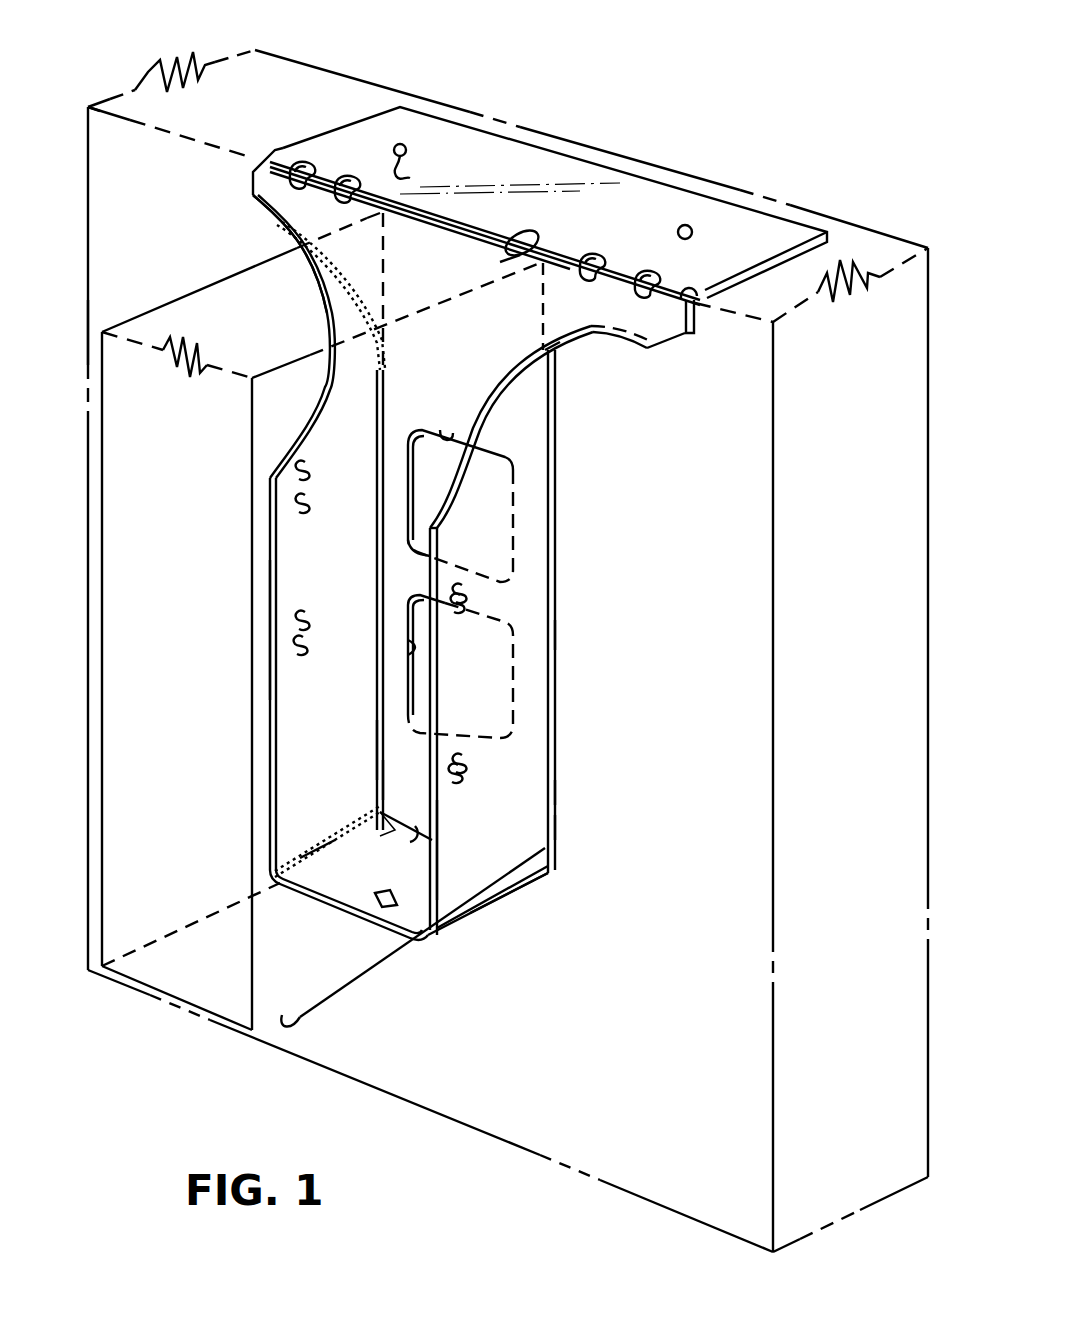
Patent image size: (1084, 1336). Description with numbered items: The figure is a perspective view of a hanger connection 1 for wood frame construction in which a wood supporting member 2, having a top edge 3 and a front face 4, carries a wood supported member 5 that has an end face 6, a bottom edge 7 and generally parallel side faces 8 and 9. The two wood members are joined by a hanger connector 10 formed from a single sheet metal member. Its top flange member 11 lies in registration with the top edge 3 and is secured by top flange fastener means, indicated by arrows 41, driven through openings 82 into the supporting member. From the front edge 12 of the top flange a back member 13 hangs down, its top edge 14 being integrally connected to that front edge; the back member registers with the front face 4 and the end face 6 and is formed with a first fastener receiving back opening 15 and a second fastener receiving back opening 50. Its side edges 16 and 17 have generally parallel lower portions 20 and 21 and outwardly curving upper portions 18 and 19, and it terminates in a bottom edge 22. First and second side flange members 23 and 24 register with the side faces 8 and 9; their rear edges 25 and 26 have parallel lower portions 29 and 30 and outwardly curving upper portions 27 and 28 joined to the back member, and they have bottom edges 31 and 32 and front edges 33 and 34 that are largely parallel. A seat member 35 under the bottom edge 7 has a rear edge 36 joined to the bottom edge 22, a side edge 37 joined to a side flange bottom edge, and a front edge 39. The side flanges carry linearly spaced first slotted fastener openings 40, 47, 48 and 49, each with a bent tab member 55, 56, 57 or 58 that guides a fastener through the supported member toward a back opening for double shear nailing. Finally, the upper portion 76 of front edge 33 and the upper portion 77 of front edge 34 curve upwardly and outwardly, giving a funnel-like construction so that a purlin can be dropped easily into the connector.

The hanger connection 1 is at (617, 133).
The wood supporting member 2 is at (303, 57).
The top edge 3 is at (258, 115).
The front face 4 is at (128, 175).
The wood supported member 5 is at (160, 300).
The end face 6 is at (500, 259).
The bottom edge 7 is at (292, 1012).
The side face 8 is at (200, 285).
The side face 9 is at (284, 409).
The hanger connector 10 is at (457, 113).
The top flange member 11 is at (533, 155).
The front edge 12 is at (605, 278).
The back member 13 is at (676, 343).
The top edge 14 is at (540, 252).
The first fastener receiving back opening 15 is at (450, 427).
The side edge 16 is at (388, 565).
The side edge 17 is at (557, 527).
The upper portion 18 is at (322, 292).
The upper portion 19 is at (560, 332).
The lower portion 20 is at (375, 748).
The lower portion 21 is at (558, 795).
The bottom edge 22 is at (417, 828).
The first side flange member 23 is at (268, 483).
The second side flange member 24 is at (440, 547).
The rear edge 25 is at (420, 530).
The rear edge 26 is at (558, 635).
The upper portion 27 is at (342, 262).
The upper portion 28 is at (568, 332).
The lower portion 29 is at (390, 742).
The lower portion 30 is at (560, 828).
The bottom edge 31 is at (248, 893).
The bottom edge 32 is at (488, 912).
The front edge 33 is at (273, 567).
The front edge 34 is at (437, 830).
The seat member 35 is at (430, 888).
The rear edge 36 is at (395, 835).
The side edge 37 is at (317, 853).
The front edge 39 is at (330, 905).
The first slotted fastener opening 40 is at (298, 652).
The top flange fastener means 41 is at (400, 140).
The first slotted fastener opening 47 is at (305, 512).
The first slotted fastener opening 48 is at (460, 770).
The first slotted fastener opening 49 is at (458, 606).
The second fastener receiving back opening 50 is at (418, 650).
The tab member 55 is at (312, 620).
The tab member 56 is at (310, 468).
The tab member 57 is at (470, 762).
The tab member 58 is at (468, 595).
The upper portion of front edge 76 is at (322, 318).
The upper portion of front edge 77 is at (510, 382).
The openings 82 is at (720, 232).